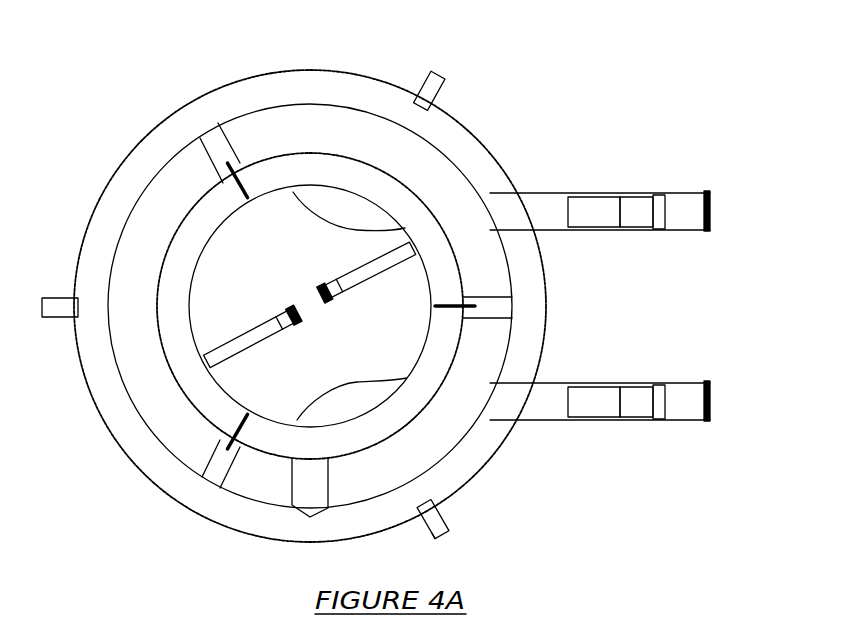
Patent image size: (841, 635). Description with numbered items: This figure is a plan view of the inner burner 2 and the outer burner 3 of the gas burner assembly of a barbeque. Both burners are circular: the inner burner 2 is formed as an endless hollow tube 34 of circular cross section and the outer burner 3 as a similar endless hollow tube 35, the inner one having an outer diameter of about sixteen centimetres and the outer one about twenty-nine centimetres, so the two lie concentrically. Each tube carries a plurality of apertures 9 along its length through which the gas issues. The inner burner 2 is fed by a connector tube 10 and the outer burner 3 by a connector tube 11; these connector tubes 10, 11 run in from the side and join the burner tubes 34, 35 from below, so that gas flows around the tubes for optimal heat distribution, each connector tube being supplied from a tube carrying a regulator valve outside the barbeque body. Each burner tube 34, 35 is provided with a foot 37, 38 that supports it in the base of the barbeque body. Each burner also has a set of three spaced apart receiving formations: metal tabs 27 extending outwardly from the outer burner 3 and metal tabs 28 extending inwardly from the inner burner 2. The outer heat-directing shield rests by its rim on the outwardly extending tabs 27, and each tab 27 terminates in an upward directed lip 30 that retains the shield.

The inner burner 2 is at (396, 187).
The outer burner 3 is at (530, 300).
The apertures 9 is at (297, 150).
The connector tube 10 is at (597, 207).
The connector tube 11 is at (602, 403).
The metal tabs 27 is at (440, 78).
The metal tabs 28 is at (440, 310).
The upward directed lip 30 is at (450, 537).
The hollow tube 34 is at (177, 348).
The hollow tube 35 is at (158, 460).
The foot 37 is at (372, 270).
The foot 38 is at (262, 333).